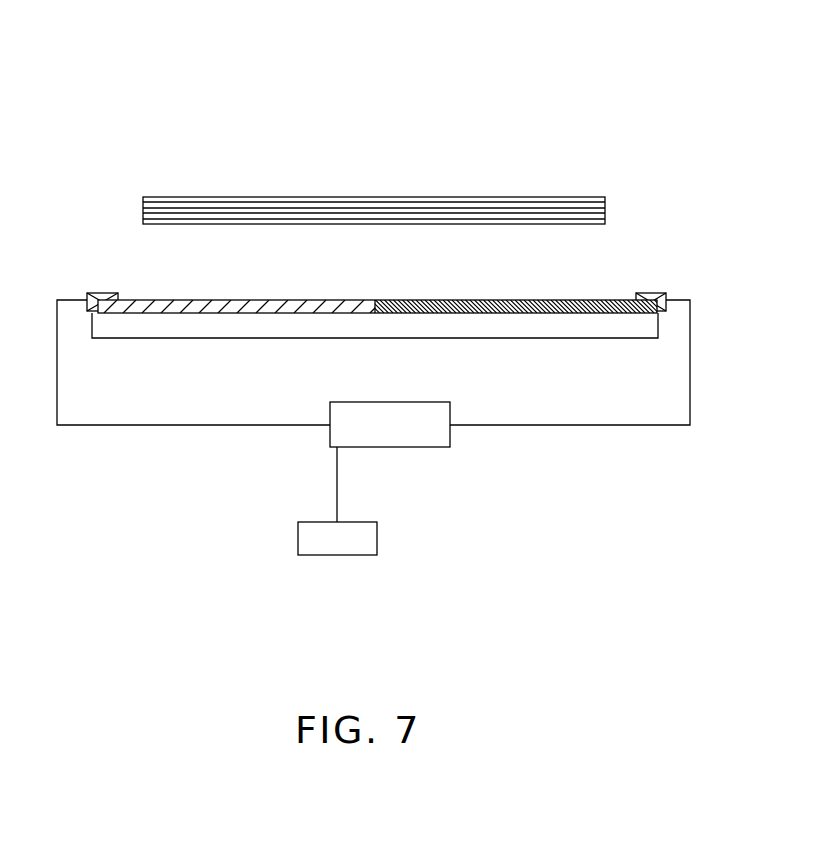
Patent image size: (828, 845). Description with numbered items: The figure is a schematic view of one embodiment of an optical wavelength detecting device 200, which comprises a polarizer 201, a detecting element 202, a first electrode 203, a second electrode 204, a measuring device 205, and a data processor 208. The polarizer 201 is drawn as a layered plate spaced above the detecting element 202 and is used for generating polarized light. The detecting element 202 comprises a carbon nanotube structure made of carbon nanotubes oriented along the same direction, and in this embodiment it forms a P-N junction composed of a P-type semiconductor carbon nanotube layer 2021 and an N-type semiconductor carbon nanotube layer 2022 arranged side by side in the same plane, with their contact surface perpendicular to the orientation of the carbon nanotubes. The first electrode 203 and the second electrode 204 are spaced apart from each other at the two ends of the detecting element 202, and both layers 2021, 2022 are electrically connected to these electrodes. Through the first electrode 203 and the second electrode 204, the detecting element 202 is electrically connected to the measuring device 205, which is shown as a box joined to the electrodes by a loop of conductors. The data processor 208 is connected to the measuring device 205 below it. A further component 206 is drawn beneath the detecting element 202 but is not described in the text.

The optical wavelength detecting device 200 is at (336, 56).
The polarizer 201 is at (583, 198).
The detecting element 202 is at (376, 286).
The P-type semiconductor carbon nanotube layer 2021 is at (358, 300).
The N-type semiconductor carbon nanotube layer 2022 is at (393, 300).
The first electrode 203 is at (107, 293).
The second electrode 204 is at (645, 293).
The measuring device 205 is at (405, 433).
The support base 206 is at (657, 315).
The data processor 208 is at (364, 547).